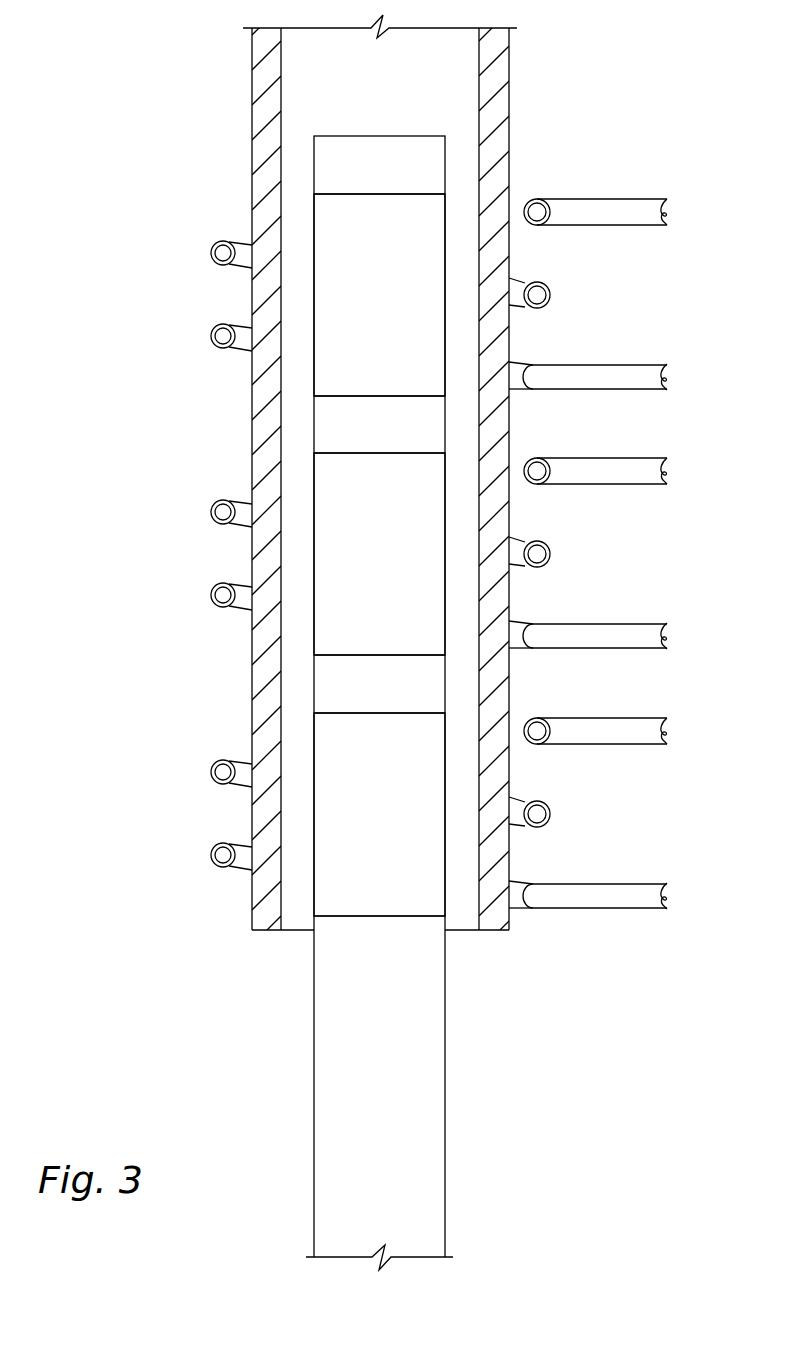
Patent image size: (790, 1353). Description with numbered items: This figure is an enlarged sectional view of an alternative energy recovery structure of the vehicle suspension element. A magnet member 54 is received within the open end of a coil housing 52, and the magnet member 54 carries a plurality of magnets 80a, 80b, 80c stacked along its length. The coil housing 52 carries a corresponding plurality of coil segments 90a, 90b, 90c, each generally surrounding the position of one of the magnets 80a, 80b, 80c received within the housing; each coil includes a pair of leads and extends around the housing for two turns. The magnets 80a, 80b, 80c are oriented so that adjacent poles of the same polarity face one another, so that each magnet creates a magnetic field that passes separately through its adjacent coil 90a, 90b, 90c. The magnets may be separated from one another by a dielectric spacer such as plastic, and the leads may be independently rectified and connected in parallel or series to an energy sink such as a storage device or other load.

The coil housing 52 is at (510, 85).
The magnet member 54 is at (445, 1095).
The magnet 80a is at (360, 833).
The magnet 80b is at (360, 573).
The magnet 80c is at (360, 315).
The coil segment 90a is at (550, 811).
The coil segment 90b is at (550, 551).
The coil segment 90c is at (550, 292).